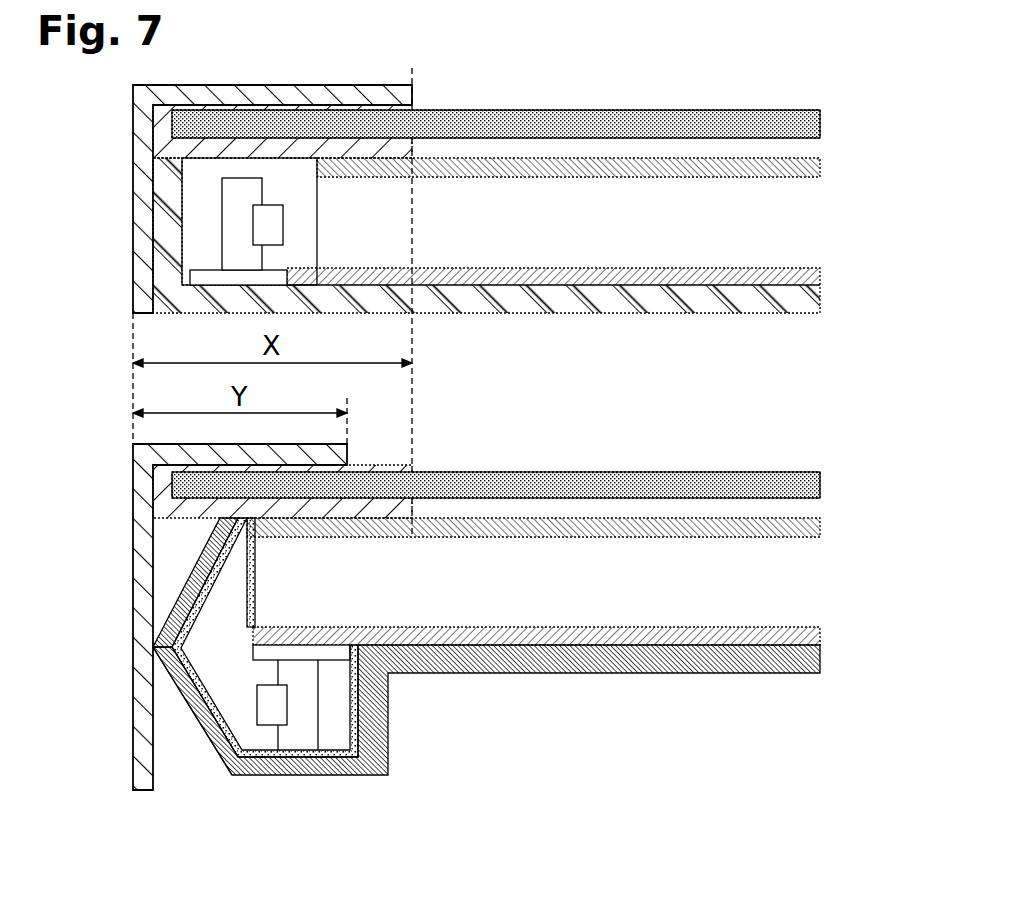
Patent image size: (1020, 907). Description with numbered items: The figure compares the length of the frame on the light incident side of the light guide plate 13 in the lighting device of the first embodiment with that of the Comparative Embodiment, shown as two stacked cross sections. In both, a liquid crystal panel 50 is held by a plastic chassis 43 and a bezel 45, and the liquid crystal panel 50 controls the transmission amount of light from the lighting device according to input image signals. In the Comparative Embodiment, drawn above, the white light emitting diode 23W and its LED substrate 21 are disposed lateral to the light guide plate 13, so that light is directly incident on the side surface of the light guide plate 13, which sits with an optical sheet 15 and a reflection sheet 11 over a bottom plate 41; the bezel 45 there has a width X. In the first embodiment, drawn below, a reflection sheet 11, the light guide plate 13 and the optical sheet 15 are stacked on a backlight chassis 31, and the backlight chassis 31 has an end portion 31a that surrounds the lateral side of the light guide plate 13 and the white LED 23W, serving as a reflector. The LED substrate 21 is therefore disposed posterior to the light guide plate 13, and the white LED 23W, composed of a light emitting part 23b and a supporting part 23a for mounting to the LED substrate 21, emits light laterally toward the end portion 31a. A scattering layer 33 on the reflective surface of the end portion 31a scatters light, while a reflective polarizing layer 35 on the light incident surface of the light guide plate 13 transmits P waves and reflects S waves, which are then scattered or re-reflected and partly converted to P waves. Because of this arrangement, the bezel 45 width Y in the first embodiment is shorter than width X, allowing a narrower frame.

The bezel 45 is at (152, 104).
The plastic chassis 43 is at (158, 138).
The liquid crystal panel 50 is at (822, 130).
The bottom plate 41 is at (822, 300).
The optical sheet 15 is at (822, 168).
The light guide plate 13 is at (808, 222).
The reflection sheet 11 is at (822, 275).
The LED substrate 21 is at (200, 277).
The white light emitting diode 23W is at (233, 207).
The supporting part 23a is at (308, 727).
The light emitting part 23b is at (281, 700).
The reflective polarizing layer 35 is at (208, 548).
The scattering layer 33 is at (190, 578).
The backlight chassis 31 is at (810, 660).
The end portion 31a is at (203, 730).